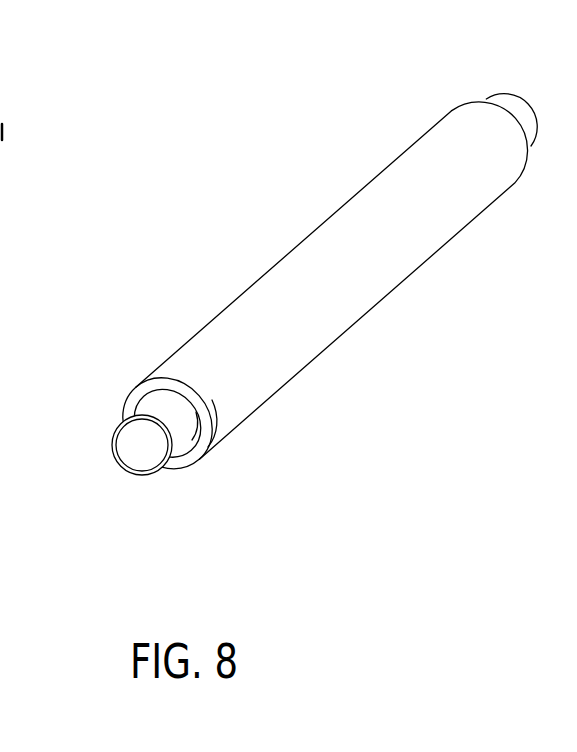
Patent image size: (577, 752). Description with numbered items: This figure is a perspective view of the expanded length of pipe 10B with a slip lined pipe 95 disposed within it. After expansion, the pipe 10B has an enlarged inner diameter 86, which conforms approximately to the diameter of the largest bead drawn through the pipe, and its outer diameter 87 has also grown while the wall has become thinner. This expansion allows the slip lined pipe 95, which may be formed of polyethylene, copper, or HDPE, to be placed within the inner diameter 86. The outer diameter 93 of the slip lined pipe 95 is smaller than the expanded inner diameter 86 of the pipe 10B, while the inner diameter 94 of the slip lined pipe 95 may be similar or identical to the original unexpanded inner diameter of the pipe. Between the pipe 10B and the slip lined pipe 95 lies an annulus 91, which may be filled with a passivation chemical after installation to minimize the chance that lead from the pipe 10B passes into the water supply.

The expanded pipe 10B is at (288, 252).
The inner diameter 86 is at (145, 400).
The outer diameter 87 is at (210, 410).
The annulus 91 is at (128, 397).
The outer diameter 93 is at (113, 453).
The inner diameter 94 is at (152, 475).
The slip lined pipe 95 is at (180, 428).